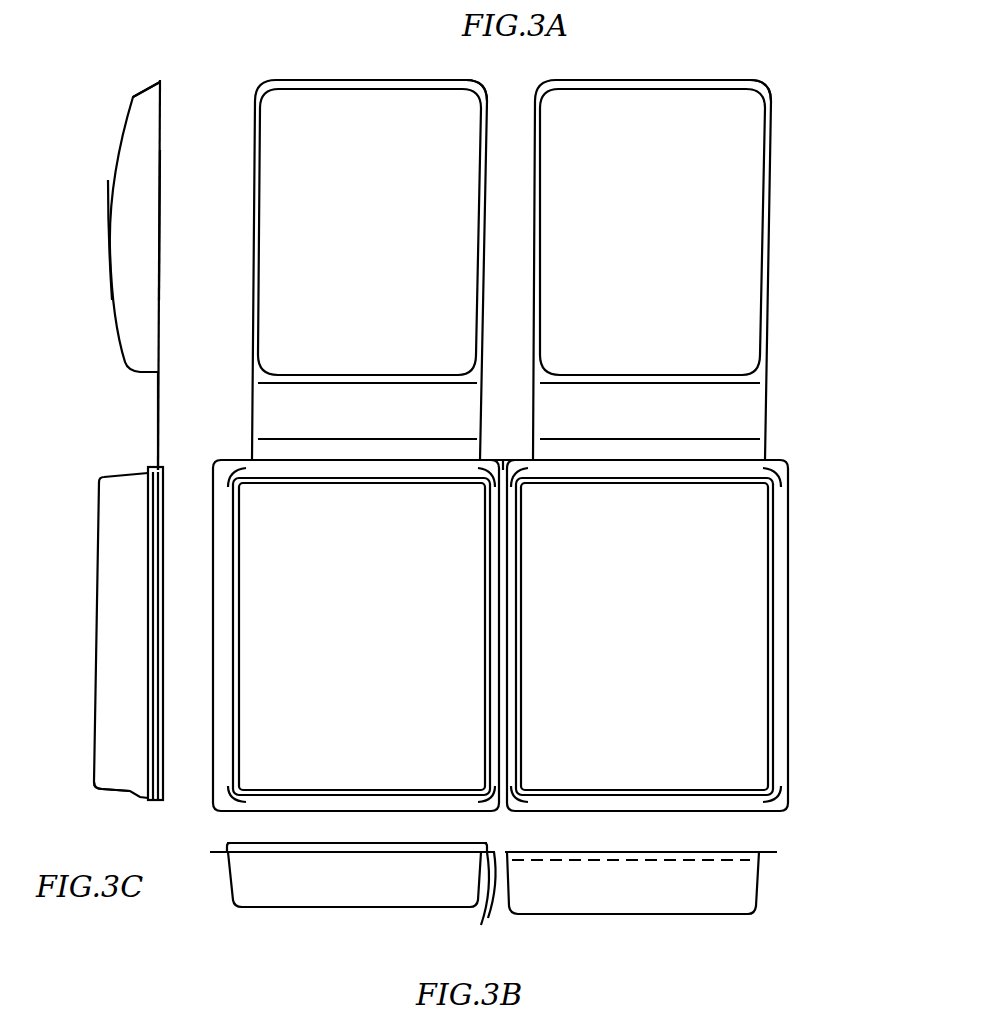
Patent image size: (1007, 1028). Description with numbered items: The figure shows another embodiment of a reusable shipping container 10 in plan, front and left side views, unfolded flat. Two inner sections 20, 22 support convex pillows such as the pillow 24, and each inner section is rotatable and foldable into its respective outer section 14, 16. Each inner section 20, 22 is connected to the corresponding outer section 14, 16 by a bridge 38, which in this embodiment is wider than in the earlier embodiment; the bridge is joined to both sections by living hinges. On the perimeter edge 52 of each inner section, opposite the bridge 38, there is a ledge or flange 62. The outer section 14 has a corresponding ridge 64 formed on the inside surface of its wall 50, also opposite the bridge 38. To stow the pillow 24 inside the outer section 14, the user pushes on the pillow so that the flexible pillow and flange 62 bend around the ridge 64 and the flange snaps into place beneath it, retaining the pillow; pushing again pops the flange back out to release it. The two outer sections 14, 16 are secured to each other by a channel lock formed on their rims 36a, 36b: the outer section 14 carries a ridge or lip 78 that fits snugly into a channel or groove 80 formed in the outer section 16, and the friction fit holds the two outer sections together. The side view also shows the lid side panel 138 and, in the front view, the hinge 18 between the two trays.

In FIG. 3A, the shipping container 10 is at (812, 204).
In FIG. 3B, the outer section 14 is at (253, 888).
In FIG. 3C, the outer section 14 is at (123, 577).
In FIG. 3B, the outer section 16 is at (702, 897).
In FIG. 3B, the hinge 18 is at (490, 897).
In FIG. 3A, the inner section 20 is at (342, 140).
In FIG. 3C, the inner section 20 is at (134, 144).
In FIG. 3A, the inner section 22 is at (732, 292).
In FIG. 3C, the convex pillow 24 is at (110, 240).
In FIG. 3A, the rim 36a is at (230, 623).
In FIG. 3A, the rim 36b is at (786, 612).
In FIG. 3A, the bridge 38 is at (749, 404).
In FIG. 3C, the wall 50 is at (128, 792).
In FIG. 3C, the perimeter edge 52 is at (160, 221).
In FIG. 3A, the flange 62 is at (722, 85).
In FIG. 3C, the flange 62 is at (161, 81).
In FIG. 3C, the ridge 64 is at (101, 785).
In FIG. 3B, the lip 78 is at (410, 850).
In FIG. 3B, the channel 80 is at (603, 855).
In FIG. 3C, the lid side panel 138 is at (152, 404).